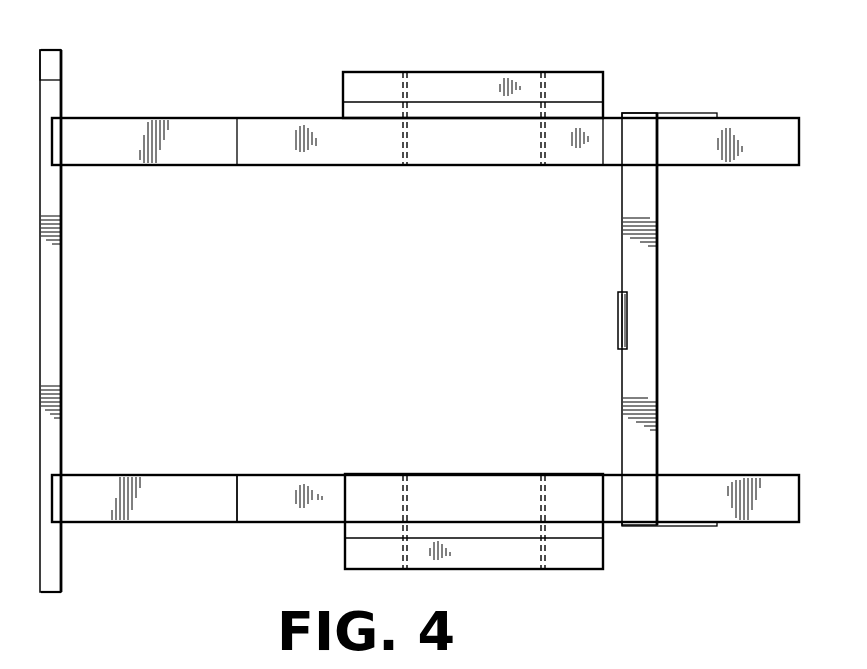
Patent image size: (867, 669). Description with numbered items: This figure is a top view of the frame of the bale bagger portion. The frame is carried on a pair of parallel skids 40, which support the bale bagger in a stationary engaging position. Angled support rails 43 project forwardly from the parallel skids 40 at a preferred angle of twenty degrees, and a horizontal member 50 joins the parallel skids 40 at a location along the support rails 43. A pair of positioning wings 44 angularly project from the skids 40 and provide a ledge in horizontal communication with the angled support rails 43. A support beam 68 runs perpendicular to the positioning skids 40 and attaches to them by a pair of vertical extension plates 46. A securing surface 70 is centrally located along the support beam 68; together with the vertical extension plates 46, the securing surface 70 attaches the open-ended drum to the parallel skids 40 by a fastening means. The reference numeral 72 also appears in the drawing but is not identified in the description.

The parallel skids 40 is at (285, 523).
The angled support rails 43 is at (144, 505).
The positioning wings 44 is at (510, 570).
The vertical extension plates 46 is at (633, 526).
The horizontal member 50 is at (62, 308).
The support beam 68 is at (649, 272).
The securing surface 70 is at (617, 307).
The plate upper end 72 is at (61, 51).